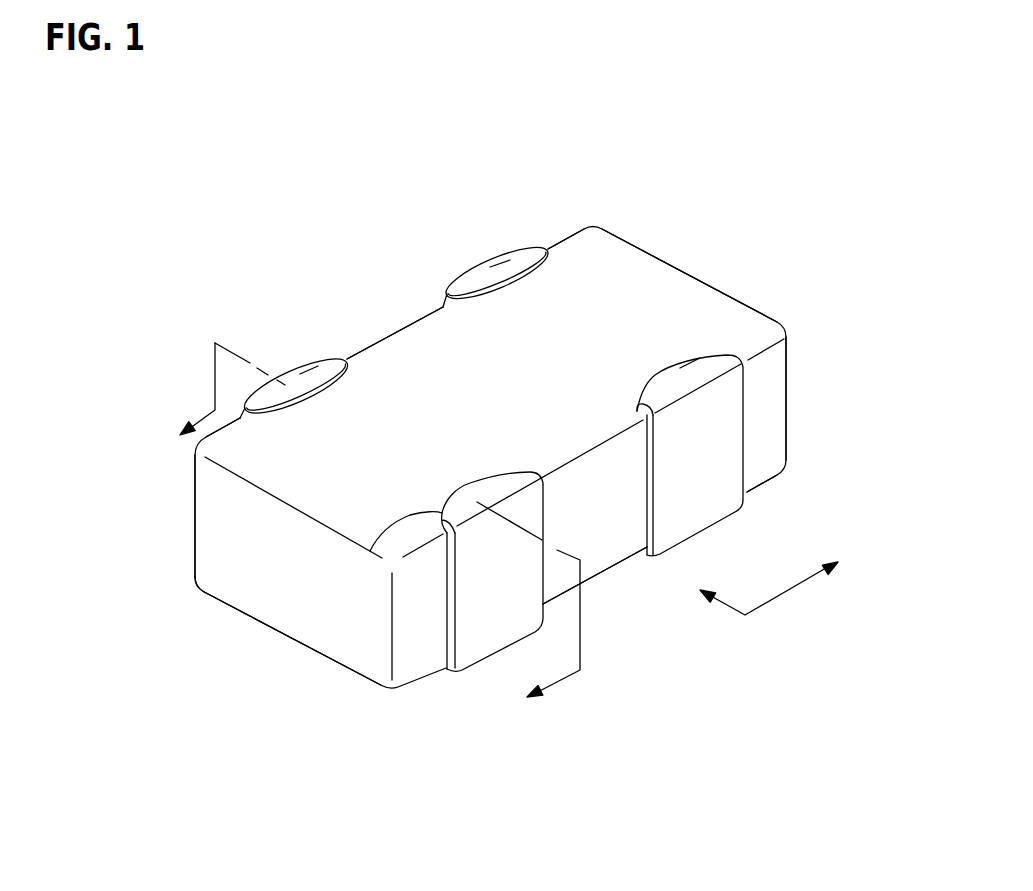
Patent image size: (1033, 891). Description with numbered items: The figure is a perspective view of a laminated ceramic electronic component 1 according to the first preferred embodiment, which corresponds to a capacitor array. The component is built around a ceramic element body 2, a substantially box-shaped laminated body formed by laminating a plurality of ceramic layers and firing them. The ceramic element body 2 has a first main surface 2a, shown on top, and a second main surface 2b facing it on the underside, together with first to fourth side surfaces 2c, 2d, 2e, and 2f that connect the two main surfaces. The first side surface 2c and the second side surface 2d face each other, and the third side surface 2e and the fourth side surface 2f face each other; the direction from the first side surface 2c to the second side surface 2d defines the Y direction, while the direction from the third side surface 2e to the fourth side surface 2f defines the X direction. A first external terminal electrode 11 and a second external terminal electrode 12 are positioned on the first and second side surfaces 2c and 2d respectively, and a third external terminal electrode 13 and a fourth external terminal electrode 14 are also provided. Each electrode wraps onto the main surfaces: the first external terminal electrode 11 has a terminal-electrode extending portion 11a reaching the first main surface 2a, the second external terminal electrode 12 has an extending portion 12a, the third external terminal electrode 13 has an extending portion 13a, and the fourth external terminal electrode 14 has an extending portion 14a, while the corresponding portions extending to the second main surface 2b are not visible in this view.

The laminated ceramic electronic component 1 is at (160, 338).
The ceramic element body 2 is at (594, 222).
The first main surface 2a is at (640, 278).
The second main surface 2b is at (347, 672).
The first side surface 2c is at (192, 525).
The second side surface 2d is at (598, 543).
The third side surface 2e is at (240, 580).
The fourth side surface 2f is at (788, 385).
The first external terminal electrode 11 is at (338, 350).
The terminal-electrode extending portion 11a is at (315, 368).
The second external terminal electrode 12 is at (457, 682).
The terminal-electrode extending portion 12a is at (370, 551).
The third external terminal electrode 13 is at (752, 452).
The terminal-electrode extending portion 13a is at (687, 367).
The fourth external terminal electrode 14 is at (456, 273).
The terminal-electrode extending portion 14a is at (500, 267).